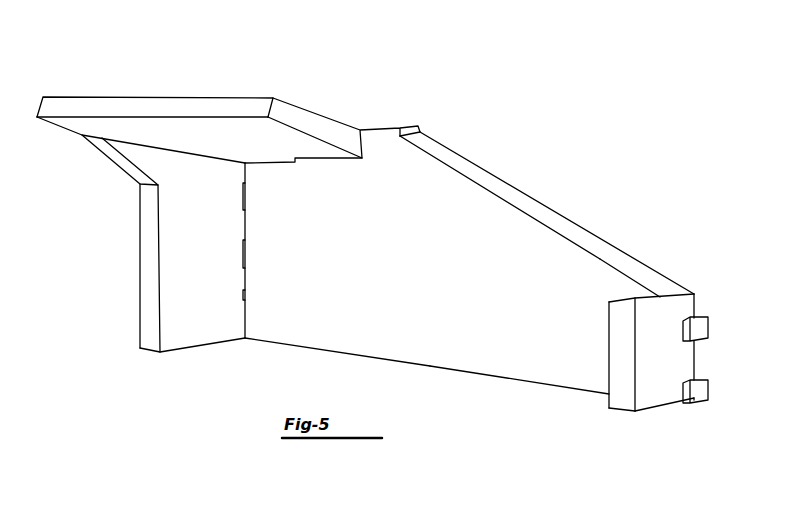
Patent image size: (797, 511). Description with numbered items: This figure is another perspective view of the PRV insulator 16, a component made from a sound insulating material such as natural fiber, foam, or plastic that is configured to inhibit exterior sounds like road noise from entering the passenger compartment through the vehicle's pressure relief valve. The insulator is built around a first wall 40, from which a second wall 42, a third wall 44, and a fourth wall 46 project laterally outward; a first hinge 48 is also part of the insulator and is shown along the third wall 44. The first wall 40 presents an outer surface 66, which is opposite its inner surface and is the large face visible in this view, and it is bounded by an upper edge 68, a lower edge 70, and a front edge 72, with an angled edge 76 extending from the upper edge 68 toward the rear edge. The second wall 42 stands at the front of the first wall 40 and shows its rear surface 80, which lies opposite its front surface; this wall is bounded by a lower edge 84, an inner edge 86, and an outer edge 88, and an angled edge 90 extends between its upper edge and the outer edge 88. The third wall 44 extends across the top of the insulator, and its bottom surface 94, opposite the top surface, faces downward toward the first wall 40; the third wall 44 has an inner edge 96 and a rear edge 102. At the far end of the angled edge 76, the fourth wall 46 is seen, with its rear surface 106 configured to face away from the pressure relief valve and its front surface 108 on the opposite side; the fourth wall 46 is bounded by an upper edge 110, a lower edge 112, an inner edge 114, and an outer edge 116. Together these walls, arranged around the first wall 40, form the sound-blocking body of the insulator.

The PRV insulator 16 is at (500, 80).
The first wall 40 is at (380, 325).
The second wall 42 is at (140, 272).
The third wall 44 is at (136, 96).
The fourth wall 46 is at (658, 315).
The first hinge 48 is at (188, 106).
The outer surface 66 is at (428, 278).
The upper edge 68 is at (338, 163).
The lower edge 70 is at (468, 372).
The front edge 72 is at (245, 217).
The angled edge 76 is at (570, 230).
The rear surface 80 is at (220, 261).
The lower edge 84 is at (203, 348).
The inner edge 86 is at (245, 291).
The outer edge 88 is at (150, 325).
The angled edge 90 is at (103, 146).
The bottom surface 94 is at (250, 149).
The inner edge 96 is at (262, 165).
The rear edge 102 is at (322, 124).
The rear surface 106 is at (679, 362).
The front surface 108 is at (608, 335).
The upper edge 110 is at (637, 297).
The lower edge 112 is at (648, 411).
The inner edge 114 is at (612, 382).
The outer edge 116 is at (695, 360).